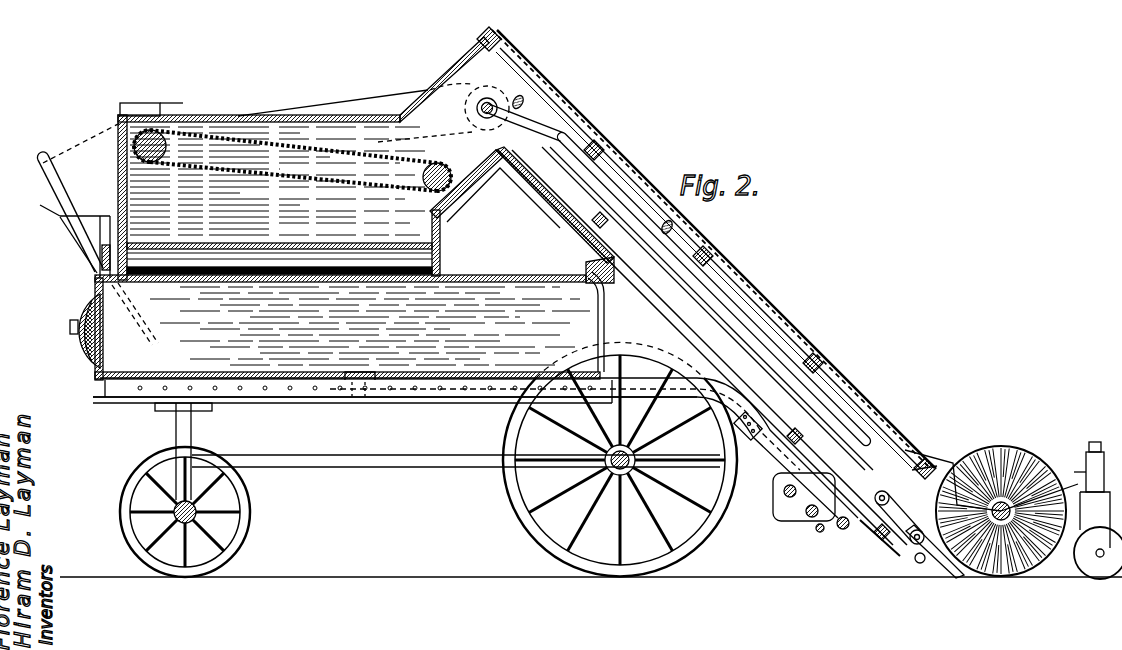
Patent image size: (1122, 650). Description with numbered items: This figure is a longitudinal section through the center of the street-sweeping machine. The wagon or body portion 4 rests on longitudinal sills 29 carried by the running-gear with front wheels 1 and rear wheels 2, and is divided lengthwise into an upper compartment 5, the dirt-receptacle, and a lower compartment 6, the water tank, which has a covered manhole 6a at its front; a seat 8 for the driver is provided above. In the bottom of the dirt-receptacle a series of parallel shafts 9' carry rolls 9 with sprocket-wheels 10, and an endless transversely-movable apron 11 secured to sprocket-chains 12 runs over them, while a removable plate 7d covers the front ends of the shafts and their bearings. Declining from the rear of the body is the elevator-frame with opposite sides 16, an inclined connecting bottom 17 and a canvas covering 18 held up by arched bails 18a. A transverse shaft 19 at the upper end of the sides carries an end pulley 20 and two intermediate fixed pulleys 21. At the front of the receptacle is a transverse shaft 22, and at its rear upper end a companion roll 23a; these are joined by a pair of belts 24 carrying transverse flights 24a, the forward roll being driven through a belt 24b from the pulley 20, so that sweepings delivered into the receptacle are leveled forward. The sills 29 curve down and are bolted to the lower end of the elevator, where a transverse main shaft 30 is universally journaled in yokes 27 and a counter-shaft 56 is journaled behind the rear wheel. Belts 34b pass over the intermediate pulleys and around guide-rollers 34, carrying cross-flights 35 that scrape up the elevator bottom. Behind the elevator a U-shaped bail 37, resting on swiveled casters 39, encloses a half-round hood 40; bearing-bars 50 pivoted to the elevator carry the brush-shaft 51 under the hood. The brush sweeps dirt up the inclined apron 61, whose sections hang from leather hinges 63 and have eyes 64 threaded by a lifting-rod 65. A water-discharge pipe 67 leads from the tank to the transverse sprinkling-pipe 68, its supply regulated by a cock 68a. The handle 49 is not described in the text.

The front wheels 1 is at (250, 514).
The rear wheels 2 is at (464, 459).
The wagon or body portion 4 is at (601, 316).
The upper compartment 5 is at (309, 131).
The lower compartment 6 is at (354, 263).
The manhole 6a is at (82, 352).
The plate 7d is at (96, 283).
The seat 8 is at (168, 104).
The rolls 9 is at (279, 238).
The parallel shafts 9' is at (75, 239).
The sprocket-wheels 10 is at (94, 262).
The endless transversely-movable apron 11 is at (312, 266).
The sprocket-chains 12 is at (152, 237).
The elevator-frame sides 16 is at (707, 308).
The elevator bottom 17 is at (575, 222).
The covering 18 is at (714, 250).
The arched bails 18a is at (604, 150).
The transverse shaft 19 is at (477, 108).
The fixed pulley 20 is at (504, 124).
The fixed pulleys 21 is at (498, 98).
The transverse shaft 22 is at (118, 152).
The companion roll or shaft 23a is at (425, 123).
The belts 24 is at (330, 146).
The transverse flights 24a is at (280, 176).
The belt 24b is at (372, 99).
The yokes 27 is at (776, 474).
The longitudinal sills 29 is at (396, 399).
The transverse main shaft 30 is at (812, 520).
The guide-rollers 34 is at (840, 530).
The belts 34b is at (603, 227).
The cross-flights 35 is at (676, 226).
The U-shaped bail or frame 37 is at (925, 447).
The swiveled casters 39 is at (1094, 580).
The half-round hood 40 is at (1000, 448).
The handle 49 is at (47, 182).
The bearing-bars 50 is at (935, 458).
The brush-shaft 51 is at (1049, 487).
The counter-shaft 56 is at (783, 495).
The inclined apron or pan 61 is at (948, 579).
The leather hinges 63 is at (878, 494).
The eye or loop 64 is at (895, 556).
The lifting-rod 65 is at (915, 565).
The water-discharge pipe 67 is at (652, 396).
The sprinkling-pipe 68 is at (815, 531).
The cock 68a is at (358, 378).